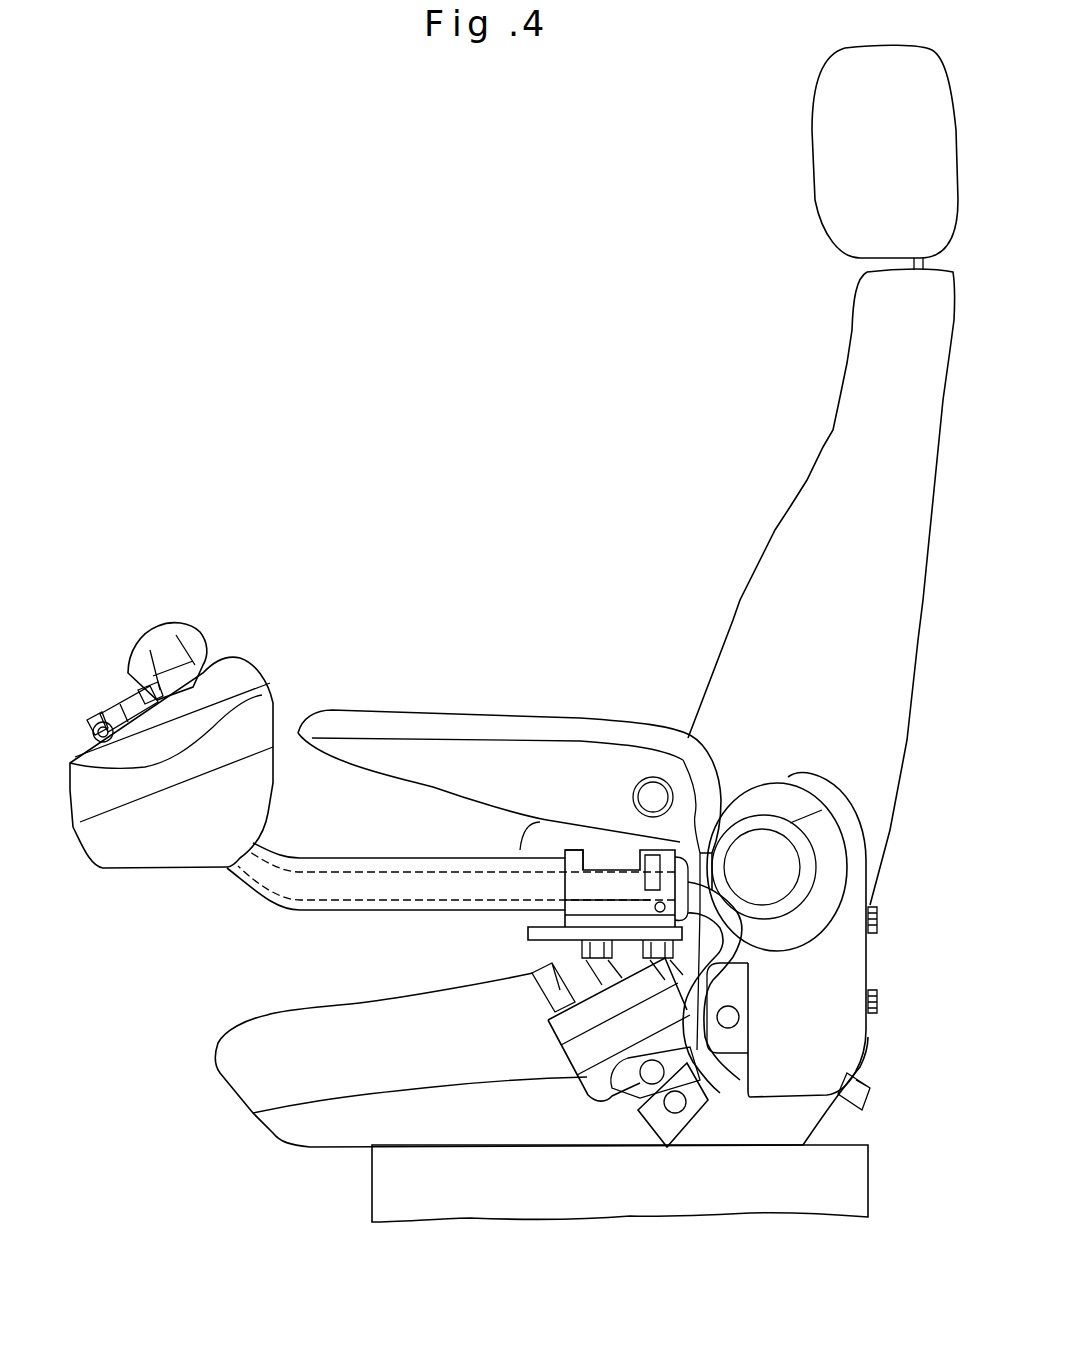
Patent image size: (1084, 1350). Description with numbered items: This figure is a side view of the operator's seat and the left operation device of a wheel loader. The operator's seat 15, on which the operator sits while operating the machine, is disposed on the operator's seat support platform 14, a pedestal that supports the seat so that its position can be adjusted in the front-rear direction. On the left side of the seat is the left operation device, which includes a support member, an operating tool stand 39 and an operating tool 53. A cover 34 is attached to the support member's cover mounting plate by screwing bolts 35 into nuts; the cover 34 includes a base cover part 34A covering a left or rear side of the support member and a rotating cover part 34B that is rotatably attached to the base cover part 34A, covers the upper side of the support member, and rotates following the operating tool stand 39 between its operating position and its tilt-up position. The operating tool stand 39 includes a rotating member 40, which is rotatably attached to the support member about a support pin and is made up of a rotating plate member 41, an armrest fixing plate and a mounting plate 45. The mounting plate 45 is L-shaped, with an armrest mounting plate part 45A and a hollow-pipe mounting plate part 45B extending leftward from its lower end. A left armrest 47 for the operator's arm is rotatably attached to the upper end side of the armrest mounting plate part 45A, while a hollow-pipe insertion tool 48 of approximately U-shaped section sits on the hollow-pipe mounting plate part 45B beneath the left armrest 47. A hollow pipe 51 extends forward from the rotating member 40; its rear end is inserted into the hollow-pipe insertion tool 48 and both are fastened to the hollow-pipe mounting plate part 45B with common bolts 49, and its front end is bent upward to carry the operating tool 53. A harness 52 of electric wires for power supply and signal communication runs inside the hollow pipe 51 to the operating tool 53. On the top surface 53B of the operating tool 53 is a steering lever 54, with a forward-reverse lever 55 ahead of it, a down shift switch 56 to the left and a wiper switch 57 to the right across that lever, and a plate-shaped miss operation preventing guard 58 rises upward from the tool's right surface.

The operator's seat support platform 14 is at (633, 1188).
The operator's seat 15 is at (830, 548).
The cover 34 is at (835, 972).
The base cover part 34A is at (808, 1048).
The rotating cover part 34B is at (770, 808).
The bolts 35 is at (877, 920).
The operating tool stand 39 is at (262, 903).
The rotating member 40 is at (522, 842).
The rotating plate member 41 is at (683, 825).
The mounting plate 45 is at (612, 850).
The armrest mounting plate part 45A is at (562, 845).
The hollow-pipe mounting plate part 45B is at (540, 937).
The left armrest 47 is at (493, 765).
The hollow-pipe insertion tool 48 is at (652, 883).
The bolts 49 is at (598, 960).
The hollow pipe 51 is at (382, 887).
The harness 52 is at (320, 870).
The operating tool 53 is at (233, 718).
The top surface 53B is at (217, 684).
The steering lever 54 is at (160, 648).
The forward-reverse lever 55 is at (128, 690).
The down shift switch 56 is at (97, 725).
The wiper switch 57 is at (100, 712).
The miss operation preventing guard 58 is at (190, 650).